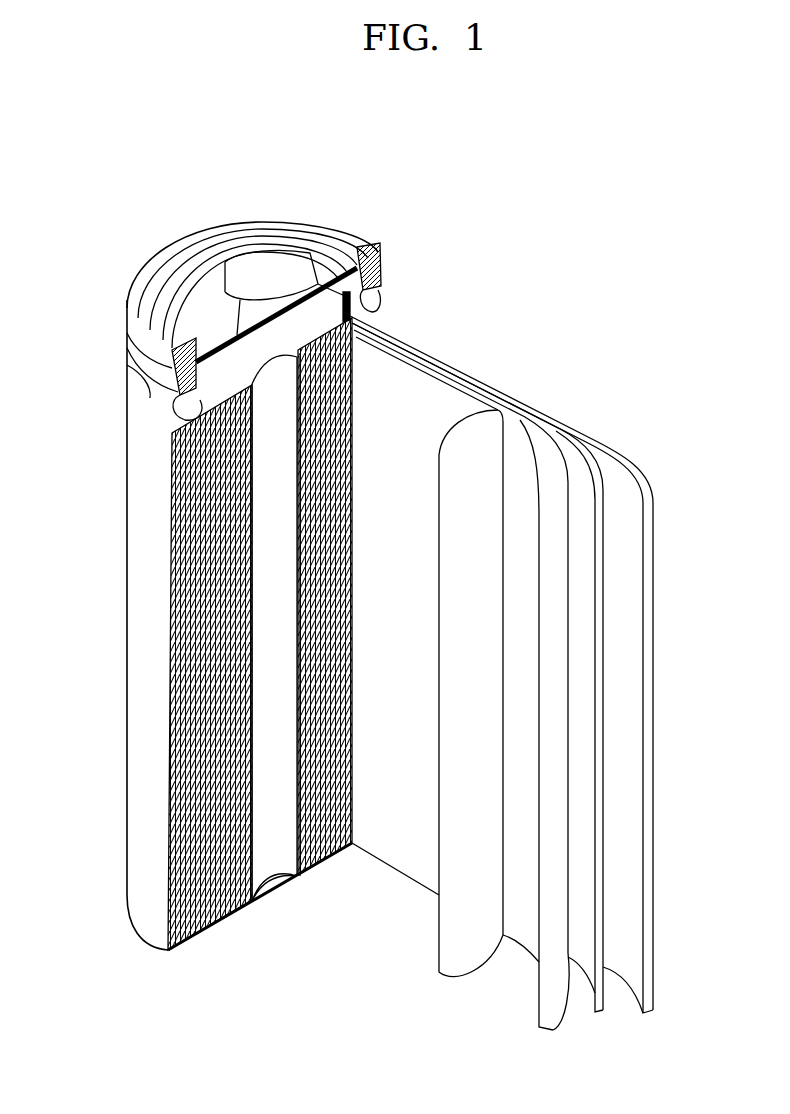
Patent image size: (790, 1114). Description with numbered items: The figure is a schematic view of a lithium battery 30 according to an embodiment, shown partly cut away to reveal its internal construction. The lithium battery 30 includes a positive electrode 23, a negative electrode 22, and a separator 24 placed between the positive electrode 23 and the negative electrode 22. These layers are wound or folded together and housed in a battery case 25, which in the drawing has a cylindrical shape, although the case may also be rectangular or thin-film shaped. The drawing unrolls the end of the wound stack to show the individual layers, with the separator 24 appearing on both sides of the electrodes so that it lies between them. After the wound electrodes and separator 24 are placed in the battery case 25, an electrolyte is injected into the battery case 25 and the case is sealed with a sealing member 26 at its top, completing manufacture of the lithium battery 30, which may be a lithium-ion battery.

The lithium battery 30 is at (341, 181).
The battery case 25 is at (135, 632).
The sealing member 26 is at (247, 263).
The negative electrode 22 is at (637, 480).
The positive electrode 23 is at (530, 434).
The separator 24 is at (586, 455).